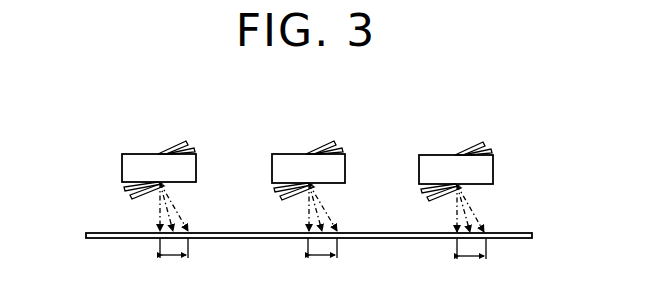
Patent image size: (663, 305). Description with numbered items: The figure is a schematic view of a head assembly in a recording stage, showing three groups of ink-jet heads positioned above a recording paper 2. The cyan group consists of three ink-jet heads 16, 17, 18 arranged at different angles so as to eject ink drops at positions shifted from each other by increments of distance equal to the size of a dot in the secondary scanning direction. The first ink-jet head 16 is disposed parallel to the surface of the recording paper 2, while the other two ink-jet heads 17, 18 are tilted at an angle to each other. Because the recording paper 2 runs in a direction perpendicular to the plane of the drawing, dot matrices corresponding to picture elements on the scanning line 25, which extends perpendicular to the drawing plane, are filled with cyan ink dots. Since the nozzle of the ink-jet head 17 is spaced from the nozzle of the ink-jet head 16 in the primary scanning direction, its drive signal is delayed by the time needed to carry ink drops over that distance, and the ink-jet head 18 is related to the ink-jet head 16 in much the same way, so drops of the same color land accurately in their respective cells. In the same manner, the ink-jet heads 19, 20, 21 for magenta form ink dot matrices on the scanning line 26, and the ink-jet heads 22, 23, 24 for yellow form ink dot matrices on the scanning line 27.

The recording paper 2 is at (392, 239).
The first ink-jet head for cyan 16 is at (141, 161).
The ink-jet head for cyan 17 is at (198, 150).
The ink-jet head for cyan 18 is at (179, 142).
The ink-jet head for magenta 19 is at (335, 170).
The ink-jet head for magenta 20 is at (344, 152).
The ink-jet head for magenta 21 is at (327, 149).
The ink-jet head for yellow 22 is at (487, 172).
The ink-jet head for yellow 23 is at (492, 152).
The ink-jet head for yellow 24 is at (472, 152).
The scanning line 25 is at (174, 258).
The scanning line 26 is at (323, 258).
The scanning line 27 is at (471, 259).